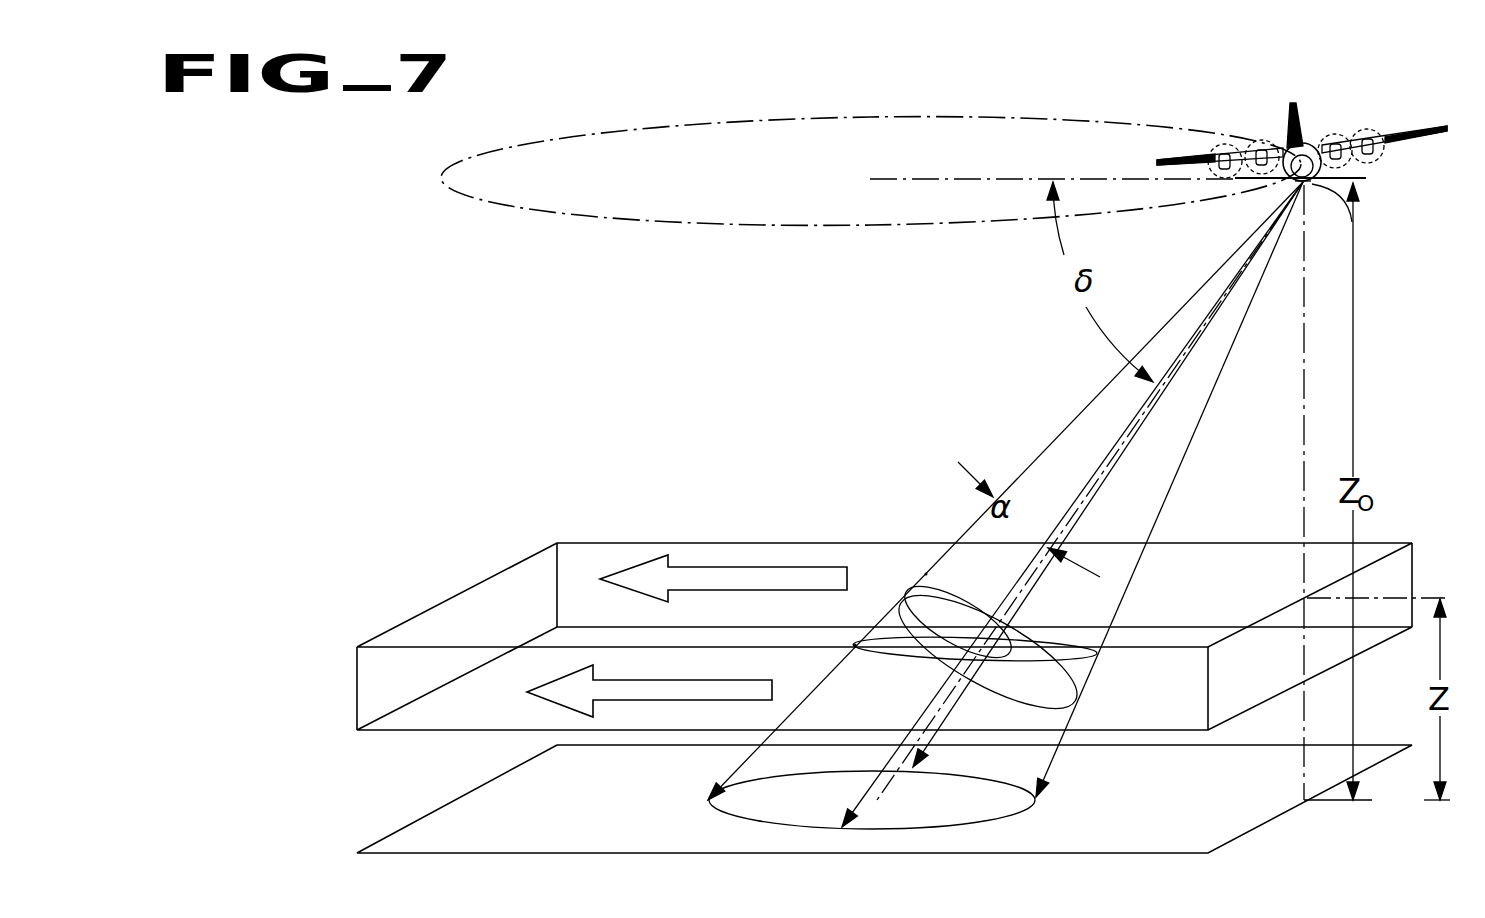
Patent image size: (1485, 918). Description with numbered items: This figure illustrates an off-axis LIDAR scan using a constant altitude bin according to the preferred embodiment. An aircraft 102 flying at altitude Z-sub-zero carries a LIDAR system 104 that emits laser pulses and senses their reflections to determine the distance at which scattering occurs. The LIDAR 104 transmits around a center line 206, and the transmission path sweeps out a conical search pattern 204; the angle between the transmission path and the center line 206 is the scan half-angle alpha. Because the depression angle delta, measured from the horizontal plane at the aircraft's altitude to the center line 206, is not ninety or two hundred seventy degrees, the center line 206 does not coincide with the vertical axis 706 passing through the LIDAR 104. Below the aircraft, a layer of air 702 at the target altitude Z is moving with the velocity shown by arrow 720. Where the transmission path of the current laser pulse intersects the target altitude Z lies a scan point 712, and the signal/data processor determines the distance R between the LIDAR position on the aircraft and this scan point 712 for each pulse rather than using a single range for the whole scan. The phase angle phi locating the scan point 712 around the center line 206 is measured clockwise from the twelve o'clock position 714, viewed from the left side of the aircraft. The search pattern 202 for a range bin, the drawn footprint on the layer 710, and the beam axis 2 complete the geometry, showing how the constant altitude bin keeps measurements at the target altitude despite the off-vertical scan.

The aircraft 102 is at (1313, 140).
The LIDAR system 104 is at (1354, 222).
The vertical axis 706 is at (1313, 300).
The conical search pattern 204 is at (1047, 443).
The laser beam axis 2 is at (1125, 600).
The layer of air 702 is at (1376, 540).
The arrow 720 is at (646, 596).
The scan circle intersection with layer 710 is at (912, 659).
The center line 206 is at (962, 692).
The search pattern 202 is at (945, 598).
The scan point 712 is at (928, 575).
The twelve o'clock position 714 is at (855, 643).